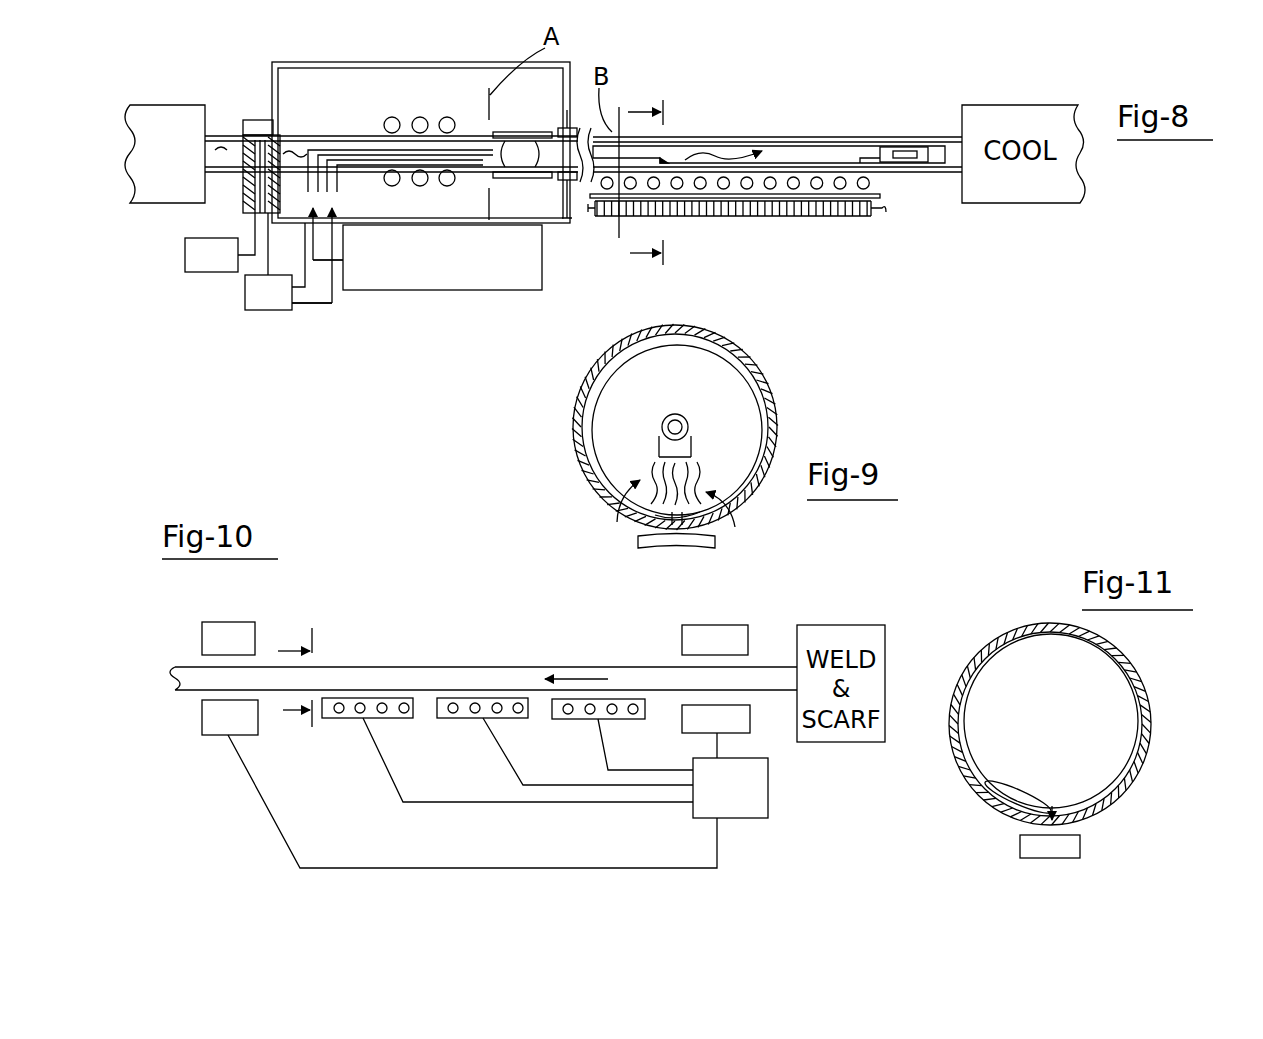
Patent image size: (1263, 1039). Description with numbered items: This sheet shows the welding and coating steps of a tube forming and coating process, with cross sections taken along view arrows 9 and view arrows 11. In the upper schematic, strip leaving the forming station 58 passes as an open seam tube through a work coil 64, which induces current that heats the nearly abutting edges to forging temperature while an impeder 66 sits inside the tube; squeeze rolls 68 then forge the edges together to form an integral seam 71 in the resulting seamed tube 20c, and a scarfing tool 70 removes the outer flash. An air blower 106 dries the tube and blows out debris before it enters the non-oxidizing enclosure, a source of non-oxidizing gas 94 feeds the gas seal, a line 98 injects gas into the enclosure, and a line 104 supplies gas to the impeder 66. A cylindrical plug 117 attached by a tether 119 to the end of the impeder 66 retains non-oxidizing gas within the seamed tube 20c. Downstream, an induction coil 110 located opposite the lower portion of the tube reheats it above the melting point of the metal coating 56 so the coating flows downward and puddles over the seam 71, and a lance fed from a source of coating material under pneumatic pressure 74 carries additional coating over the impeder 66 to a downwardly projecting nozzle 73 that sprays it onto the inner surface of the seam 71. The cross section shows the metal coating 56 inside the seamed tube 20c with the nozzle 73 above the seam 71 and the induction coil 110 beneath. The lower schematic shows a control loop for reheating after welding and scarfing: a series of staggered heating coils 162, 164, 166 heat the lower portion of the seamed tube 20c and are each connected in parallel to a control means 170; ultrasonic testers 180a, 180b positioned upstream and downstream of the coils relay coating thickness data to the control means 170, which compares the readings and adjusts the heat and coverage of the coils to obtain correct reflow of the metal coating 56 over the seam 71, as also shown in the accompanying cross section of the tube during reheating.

In FIG. 8, the forming station 58 is at (165, 105).
In FIG. 8, the scarfing tool 70 is at (316, 143).
In FIG. 8, the impeder 66 is at (362, 165).
In FIG. 8, the work coil 64 is at (447, 116).
In FIG. 8, the squeeze rolls 68 is at (530, 178).
In FIG. 8, the view arrows 9— 9 is at (654, 178).
In FIG. 8, the nozzle 73 is at (668, 160).
In FIG. 9, the nozzle 73 is at (660, 432).
In FIG. 8, the tether 119 is at (836, 158).
In FIG. 8, the cylindrical plug 117 is at (905, 147).
In FIG. 8, the induction coil 110 is at (738, 208).
In FIG. 9, the induction coil 110 is at (640, 546).
In FIG. 8, the air blower 106 is at (185, 258).
In FIG. 8, the source of non-oxidizing gas 94 is at (275, 261).
In FIG. 8, the line 98 is at (306, 306).
In FIG. 8, the line 104 is at (322, 305).
In FIG. 8, the source of coating material under pneumatic pressure 74 is at (395, 290).
In FIG. 9, the metal coating 56 is at (574, 445).
In FIG. 11, the metal coating 56 is at (1148, 703).
In FIG. 9, the seamed tube 20c is at (778, 412).
In FIG. 10, the seamed tube 20c is at (510, 667).
In FIG. 11, the seamed tube 20c is at (1146, 764).
In FIG. 9, the seam 71 is at (688, 528).
In FIG. 11, the seam 71 is at (977, 795).
In FIG. 10, the ultrasonic tester 180b is at (218, 622).
In FIG. 10, the ultrasonic tester 180a is at (680, 642).
In FIG. 10, the view arrows 11— 11 is at (318, 682).
In FIG. 10, the heating coil 162 is at (413, 720).
In FIG. 11, the heating coil 162 is at (1048, 845).
In FIG. 10, the heating coil 164 is at (530, 722).
In FIG. 10, the heating coil 166 is at (625, 720).
In FIG. 10, the control means 170 is at (730, 788).